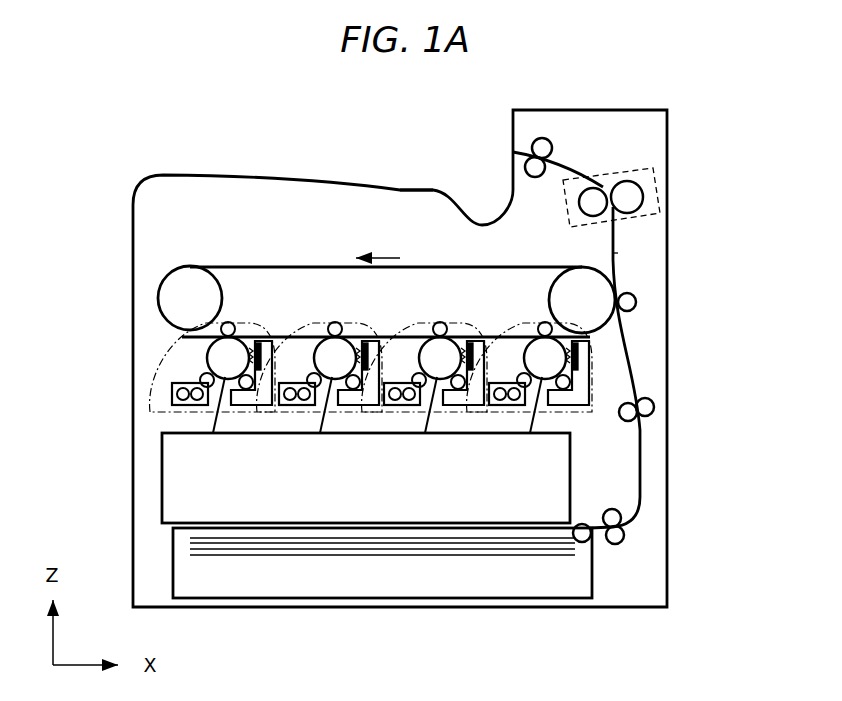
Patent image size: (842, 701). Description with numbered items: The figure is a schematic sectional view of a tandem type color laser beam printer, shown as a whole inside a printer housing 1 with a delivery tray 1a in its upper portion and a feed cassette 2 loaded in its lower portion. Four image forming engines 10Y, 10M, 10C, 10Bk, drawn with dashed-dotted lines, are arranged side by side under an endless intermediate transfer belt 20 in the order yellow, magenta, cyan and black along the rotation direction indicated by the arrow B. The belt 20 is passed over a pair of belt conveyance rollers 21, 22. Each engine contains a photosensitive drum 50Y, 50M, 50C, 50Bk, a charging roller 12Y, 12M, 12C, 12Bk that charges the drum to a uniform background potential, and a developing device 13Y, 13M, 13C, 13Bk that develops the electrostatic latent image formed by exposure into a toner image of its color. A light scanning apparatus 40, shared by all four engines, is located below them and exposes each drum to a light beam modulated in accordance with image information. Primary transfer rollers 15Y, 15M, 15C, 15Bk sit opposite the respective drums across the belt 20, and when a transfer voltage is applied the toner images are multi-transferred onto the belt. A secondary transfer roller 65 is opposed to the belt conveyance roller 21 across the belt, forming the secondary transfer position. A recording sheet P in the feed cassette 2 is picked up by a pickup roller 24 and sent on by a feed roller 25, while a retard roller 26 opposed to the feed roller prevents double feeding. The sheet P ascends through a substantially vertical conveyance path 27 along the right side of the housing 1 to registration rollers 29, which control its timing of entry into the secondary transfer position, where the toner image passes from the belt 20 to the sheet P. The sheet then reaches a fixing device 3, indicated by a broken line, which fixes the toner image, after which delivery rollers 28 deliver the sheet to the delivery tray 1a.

The printer housing 1 is at (150, 347).
The delivery tray 1a is at (433, 190).
The feed cassette 2 is at (593, 587).
The fixing device 3 is at (650, 170).
The image forming engine for yellow 10Y is at (162, 408).
The image forming engine for magenta 10M is at (293, 417).
The image forming engine for cyan 10C is at (451, 418).
The image forming engine for black 10Bk is at (593, 418).
The charging roller 12Y is at (248, 389).
The charging roller 12M is at (355, 389).
The charging roller 12C is at (460, 389).
The charging roller 12Bk is at (590, 370).
The developing device 13Y is at (172, 392).
The developing device 13M is at (284, 383).
The developing device 13C is at (390, 383).
The developing device 13Bk is at (495, 383).
The primary transfer roller 15Y is at (234, 325).
The primary transfer roller 15M is at (333, 326).
The primary transfer roller 15C is at (438, 325).
The primary transfer roller 15Bk is at (545, 329).
The intermediate transfer belt 20 is at (322, 267).
The belt conveyance roller 21 is at (585, 291).
The belt conveyance roller 22 is at (192, 300).
The pickup roller 24 is at (578, 541).
The feed roller 25 is at (621, 518).
The retard roller 26 is at (624, 536).
The conveyance path 27 is at (613, 255).
The delivery rollers 28 is at (541, 138).
The registration rollers 29 is at (654, 406).
The light scanning apparatus 40 is at (577, 469).
The photosensitive drum 50Y is at (228, 358).
The photosensitive drum 50M is at (337, 356).
The photosensitive drum 50C is at (440, 358).
The photosensitive drum 50Bk is at (546, 358).
The secondary transfer roller 65 is at (636, 300).
The arrow indicating belt rotation direction B is at (385, 258).
The recording sheet P is at (471, 566).